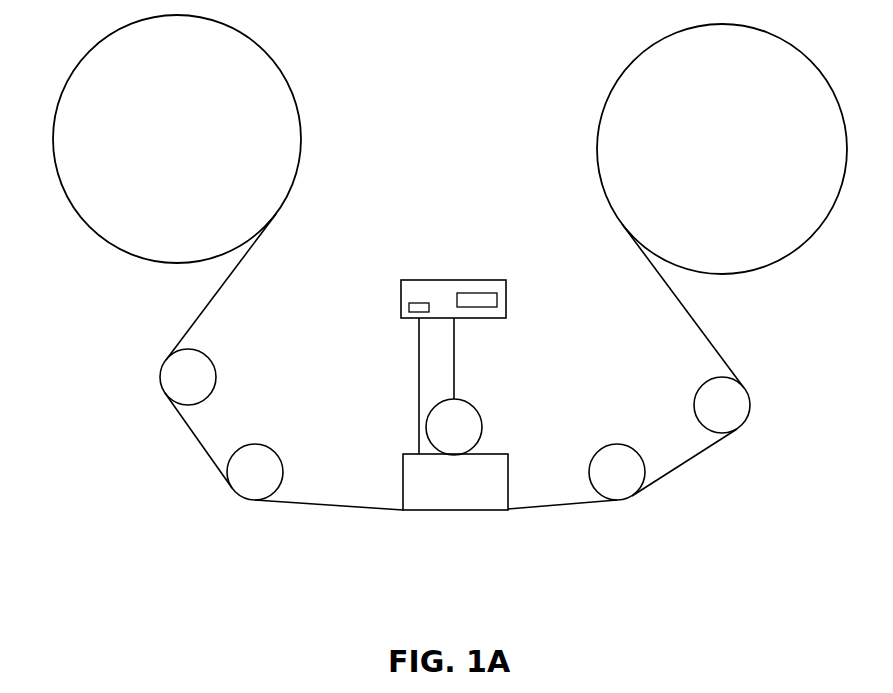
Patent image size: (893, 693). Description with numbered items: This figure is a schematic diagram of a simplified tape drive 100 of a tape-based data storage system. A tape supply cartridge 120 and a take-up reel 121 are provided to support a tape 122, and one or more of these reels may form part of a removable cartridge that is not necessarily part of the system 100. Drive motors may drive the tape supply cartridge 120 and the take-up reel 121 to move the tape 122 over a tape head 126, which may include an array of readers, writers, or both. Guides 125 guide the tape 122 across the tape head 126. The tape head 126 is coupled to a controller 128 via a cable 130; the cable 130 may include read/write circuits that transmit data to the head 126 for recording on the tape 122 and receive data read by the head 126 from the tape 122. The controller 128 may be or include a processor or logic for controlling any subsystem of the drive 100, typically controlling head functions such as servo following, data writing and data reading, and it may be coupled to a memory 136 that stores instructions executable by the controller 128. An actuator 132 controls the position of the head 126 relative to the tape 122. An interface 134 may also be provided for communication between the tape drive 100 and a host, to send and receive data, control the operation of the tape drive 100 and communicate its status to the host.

The tape drive 100 is at (132, 308).
The tape supply cartridge 120 is at (301, 121).
The take-up reel 121 is at (802, 250).
The tape 122 is at (332, 510).
The guides 125 is at (255, 444).
The tape head 126 is at (508, 480).
The controller 128 is at (451, 280).
The cable 130 is at (419, 423).
The actuator 132 is at (478, 405).
The interface 134 is at (487, 293).
The memory 136 is at (413, 303).